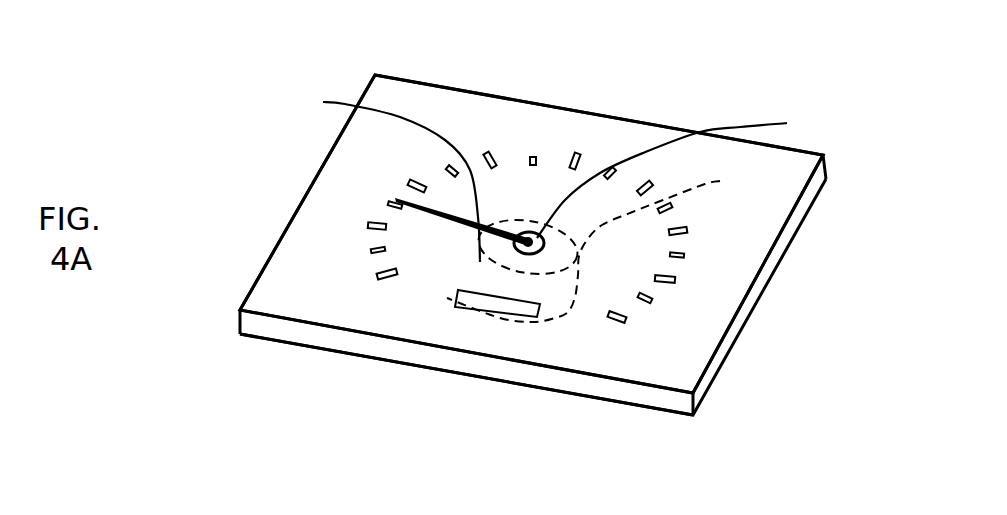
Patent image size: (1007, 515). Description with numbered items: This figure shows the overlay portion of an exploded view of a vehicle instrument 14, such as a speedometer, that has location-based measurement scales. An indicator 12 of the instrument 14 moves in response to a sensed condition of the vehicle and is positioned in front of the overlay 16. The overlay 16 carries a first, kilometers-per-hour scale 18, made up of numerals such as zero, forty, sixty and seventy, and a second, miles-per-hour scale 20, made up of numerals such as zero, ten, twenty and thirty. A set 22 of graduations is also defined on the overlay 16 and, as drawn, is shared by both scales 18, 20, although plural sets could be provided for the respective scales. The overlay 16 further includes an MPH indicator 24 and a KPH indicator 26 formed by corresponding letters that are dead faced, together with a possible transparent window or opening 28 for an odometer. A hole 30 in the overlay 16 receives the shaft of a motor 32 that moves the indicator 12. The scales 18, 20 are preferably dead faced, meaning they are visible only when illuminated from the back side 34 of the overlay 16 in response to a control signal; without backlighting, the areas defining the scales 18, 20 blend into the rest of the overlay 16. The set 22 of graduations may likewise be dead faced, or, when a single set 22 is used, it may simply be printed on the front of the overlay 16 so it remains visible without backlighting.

The indicator 12 is at (378, 178).
The instrument 14 is at (595, 76).
The overlay 16 is at (465, 103).
The kilometers-per-hour scale 18 is at (345, 205).
The miles-per-hour scale 20 is at (600, 163).
The set of graduations 22 is at (393, 283).
The MPH indicator 24 is at (537, 273).
The KPH indicator 26 is at (484, 322).
The window or opening for odometer 28 is at (458, 298).
The hole 30 is at (686, 175).
The motor 32 is at (607, 247).
The back side of overlay 34 is at (643, 410).